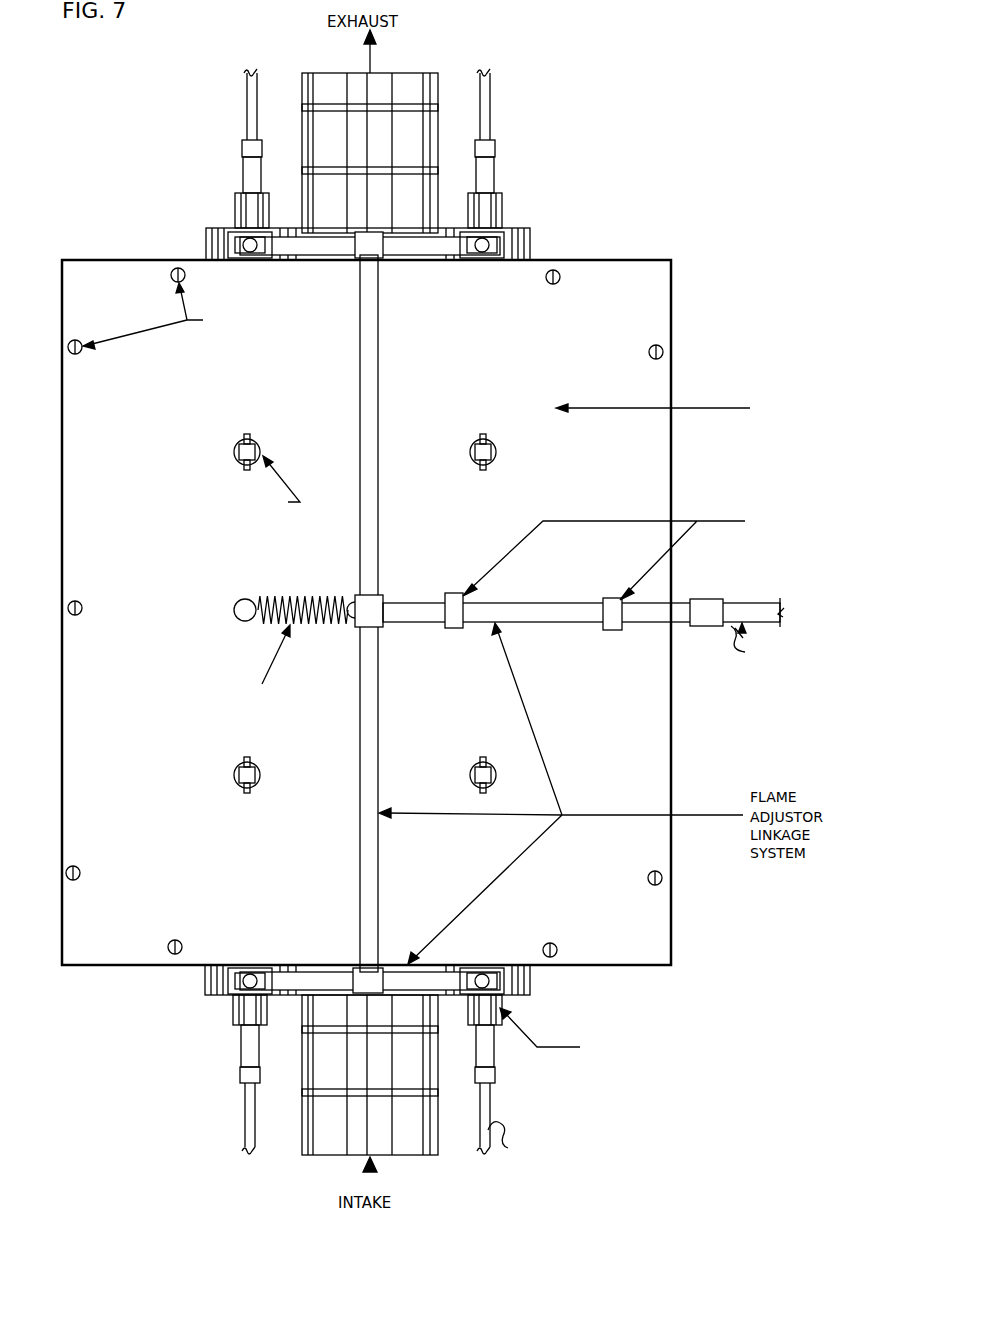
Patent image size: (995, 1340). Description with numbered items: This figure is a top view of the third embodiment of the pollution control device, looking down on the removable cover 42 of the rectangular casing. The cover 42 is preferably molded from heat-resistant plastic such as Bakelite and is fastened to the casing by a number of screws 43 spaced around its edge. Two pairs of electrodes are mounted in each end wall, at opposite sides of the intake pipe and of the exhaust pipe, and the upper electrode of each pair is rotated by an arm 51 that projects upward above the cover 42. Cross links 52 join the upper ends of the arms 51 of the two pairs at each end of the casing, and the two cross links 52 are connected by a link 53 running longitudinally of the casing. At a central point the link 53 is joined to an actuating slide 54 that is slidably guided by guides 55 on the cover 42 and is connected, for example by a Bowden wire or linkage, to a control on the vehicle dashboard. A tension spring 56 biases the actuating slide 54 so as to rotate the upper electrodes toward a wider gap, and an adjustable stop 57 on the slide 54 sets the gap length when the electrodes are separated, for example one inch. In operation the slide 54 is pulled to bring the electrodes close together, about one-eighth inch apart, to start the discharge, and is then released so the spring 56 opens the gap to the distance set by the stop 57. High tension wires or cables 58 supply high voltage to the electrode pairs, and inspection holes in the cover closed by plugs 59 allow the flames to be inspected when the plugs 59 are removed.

The removable cover 42 is at (186, 847).
The screws 43 is at (647, 347).
The arm 51 is at (505, 981).
The cross links 52 is at (445, 244).
The link 53 is at (378, 733).
The actuating slide 54 is at (548, 600).
The guides 55 is at (452, 630).
The tension spring 56 is at (300, 600).
The stop 57 is at (706, 628).
The high tension wires or cables 58 is at (245, 1110).
The plugs 59 is at (262, 447).